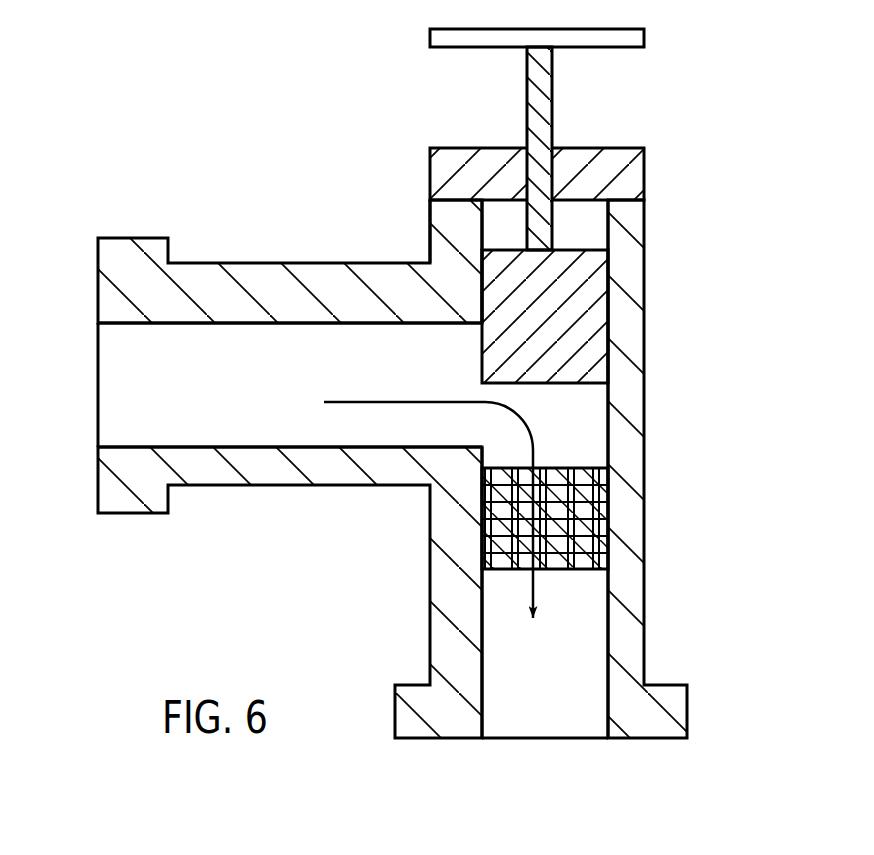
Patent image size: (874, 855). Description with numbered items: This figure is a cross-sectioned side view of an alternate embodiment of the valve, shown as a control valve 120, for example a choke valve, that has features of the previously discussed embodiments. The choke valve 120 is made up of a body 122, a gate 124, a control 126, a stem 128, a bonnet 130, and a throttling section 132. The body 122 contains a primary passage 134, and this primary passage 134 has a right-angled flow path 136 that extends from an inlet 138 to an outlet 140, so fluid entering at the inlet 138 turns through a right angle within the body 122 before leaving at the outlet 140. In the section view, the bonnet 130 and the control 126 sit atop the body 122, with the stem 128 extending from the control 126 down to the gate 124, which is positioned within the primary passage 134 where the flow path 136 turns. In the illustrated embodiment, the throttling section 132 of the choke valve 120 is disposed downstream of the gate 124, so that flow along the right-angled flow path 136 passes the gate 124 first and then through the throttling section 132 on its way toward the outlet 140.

The control valve 120 is at (757, 84).
The body 122 is at (650, 298).
The gate 124 is at (592, 348).
The control 126 is at (650, 165).
The stem 128 is at (548, 238).
The bonnet 130 is at (427, 208).
The throttling section 132 is at (606, 527).
The primary passage 134 is at (239, 328).
The right-angled flow path 136 is at (518, 413).
The inlet 138 is at (95, 360).
The outlet 140 is at (574, 745).